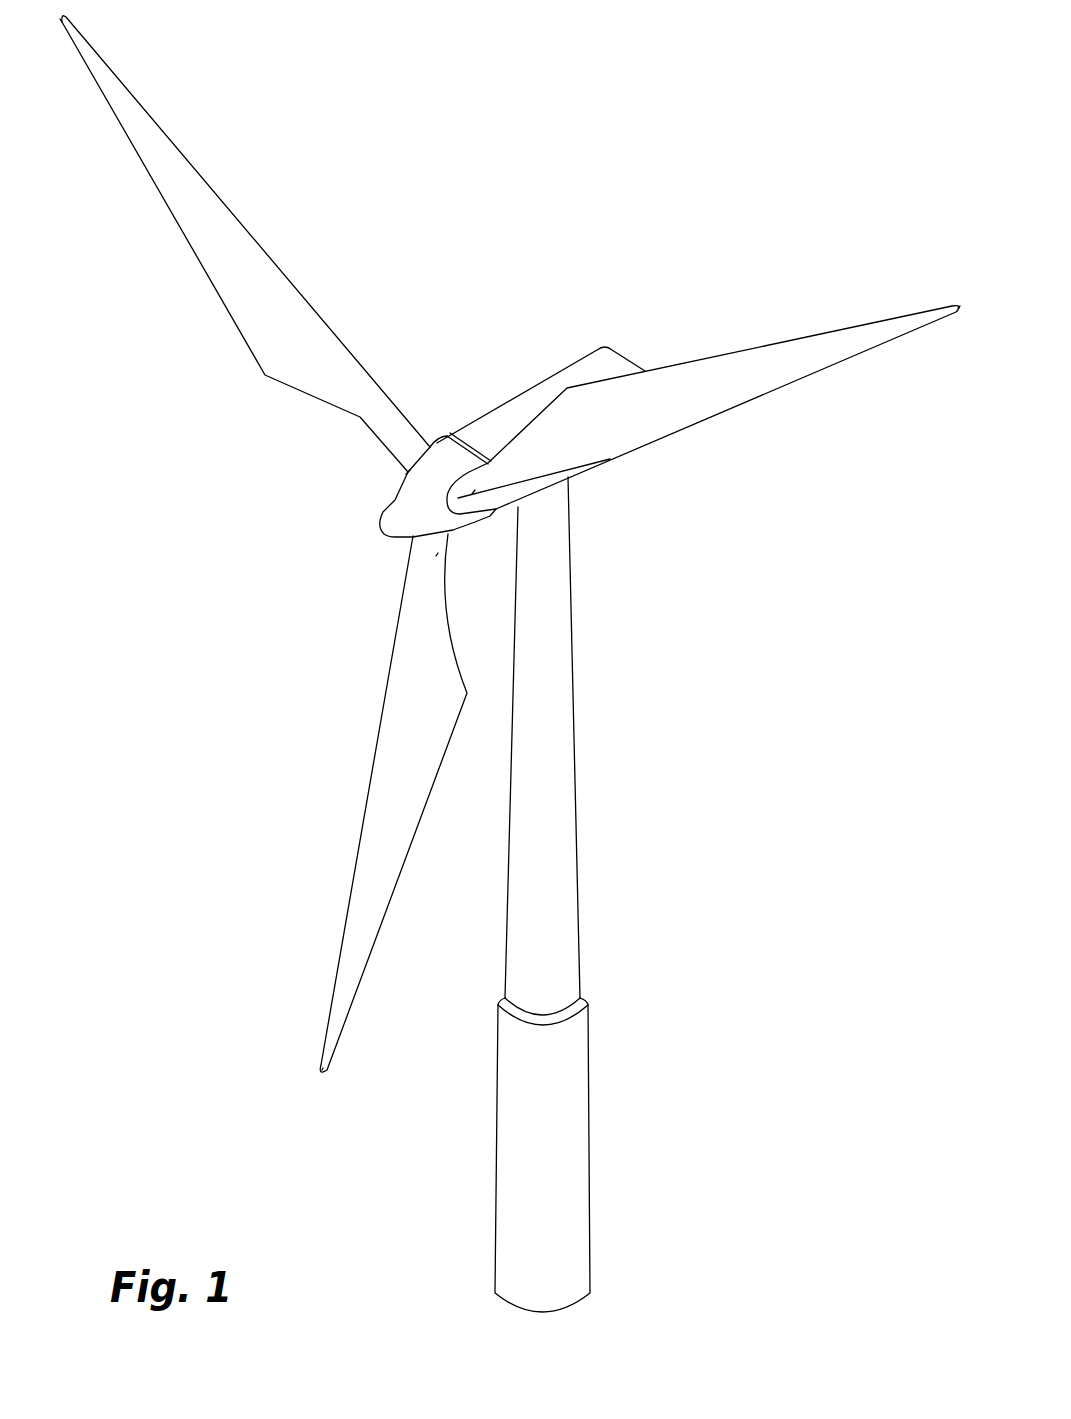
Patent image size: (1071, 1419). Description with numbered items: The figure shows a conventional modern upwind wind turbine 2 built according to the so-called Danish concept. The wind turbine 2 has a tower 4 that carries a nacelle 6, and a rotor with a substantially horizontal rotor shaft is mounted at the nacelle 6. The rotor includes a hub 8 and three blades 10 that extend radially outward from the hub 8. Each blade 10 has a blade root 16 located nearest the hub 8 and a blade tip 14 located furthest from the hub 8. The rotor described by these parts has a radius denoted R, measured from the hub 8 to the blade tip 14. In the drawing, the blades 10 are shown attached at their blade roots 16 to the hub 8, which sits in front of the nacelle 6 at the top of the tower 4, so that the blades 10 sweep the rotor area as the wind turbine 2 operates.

The wind turbine 2 is at (510, 664).
The tower 4 is at (563, 743).
The nacelle 6 is at (503, 417).
The hub 8 is at (392, 510).
The blade 10 is at (283, 345).
The blade tip 14 is at (110, 82).
The blade root 16 is at (408, 460).